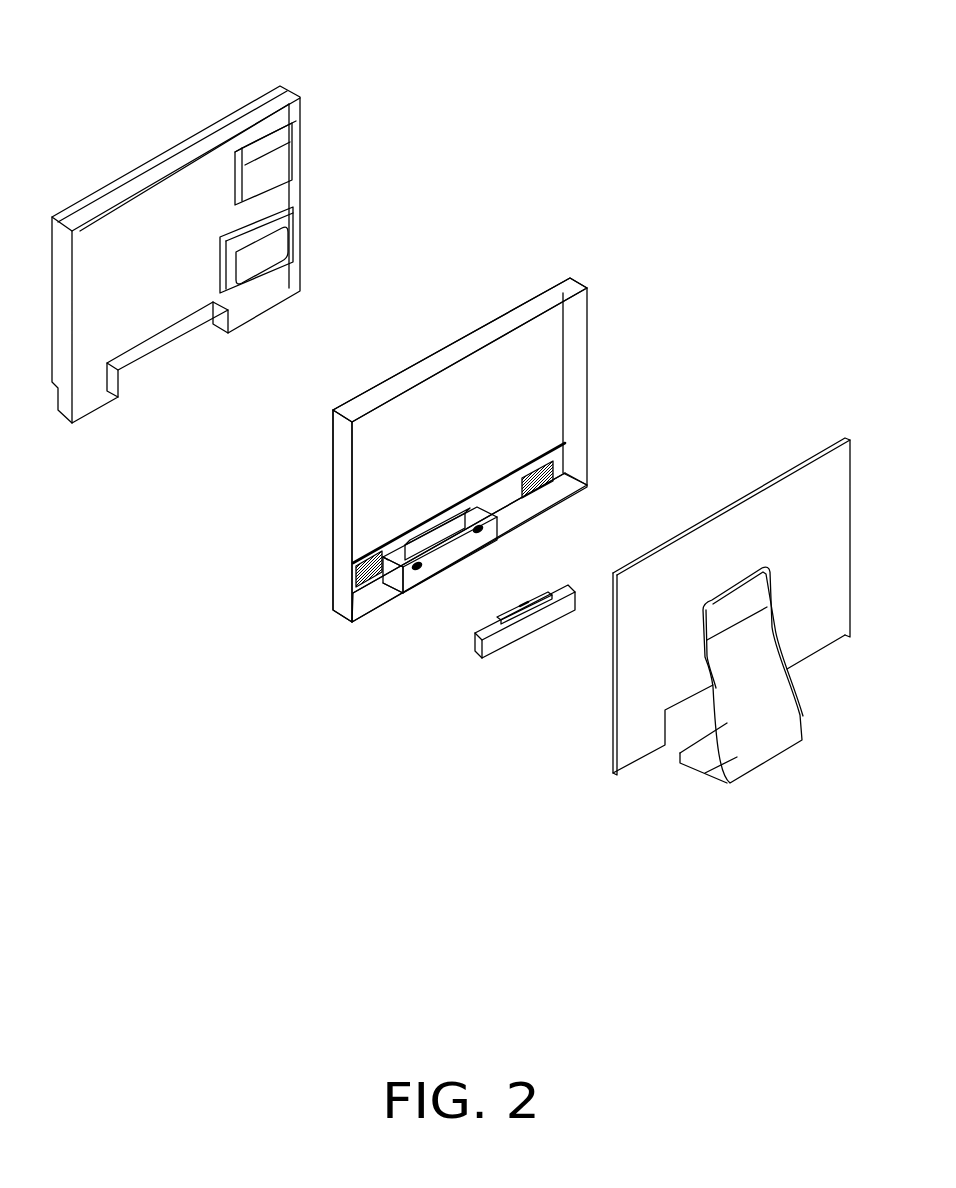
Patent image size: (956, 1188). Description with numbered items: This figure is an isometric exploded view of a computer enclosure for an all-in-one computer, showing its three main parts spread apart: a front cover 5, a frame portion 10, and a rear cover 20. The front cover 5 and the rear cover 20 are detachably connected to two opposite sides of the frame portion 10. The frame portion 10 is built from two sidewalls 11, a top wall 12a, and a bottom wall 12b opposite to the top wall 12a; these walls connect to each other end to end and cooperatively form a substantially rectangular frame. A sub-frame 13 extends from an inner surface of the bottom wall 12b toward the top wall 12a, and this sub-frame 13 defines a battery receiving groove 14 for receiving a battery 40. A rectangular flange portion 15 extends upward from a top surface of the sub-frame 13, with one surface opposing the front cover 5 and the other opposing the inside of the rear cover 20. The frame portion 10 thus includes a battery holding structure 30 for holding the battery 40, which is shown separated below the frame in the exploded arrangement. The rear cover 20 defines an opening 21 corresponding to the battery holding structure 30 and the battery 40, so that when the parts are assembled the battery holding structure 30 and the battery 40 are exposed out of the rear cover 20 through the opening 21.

The front cover 5 is at (283, 102).
The frame portion 10 is at (428, 472).
The sidewalls 11 is at (345, 457).
The top wall 12a is at (367, 402).
The bottom wall 12b is at (370, 600).
The sub-frame 13 is at (350, 588).
The battery receiving groove 14 is at (425, 575).
The flange portion 15 is at (460, 527).
The rear cover 20 is at (731, 627).
The opening 21 is at (678, 715).
The battery holding structure 30 is at (470, 541).
The battery 40 is at (520, 630).